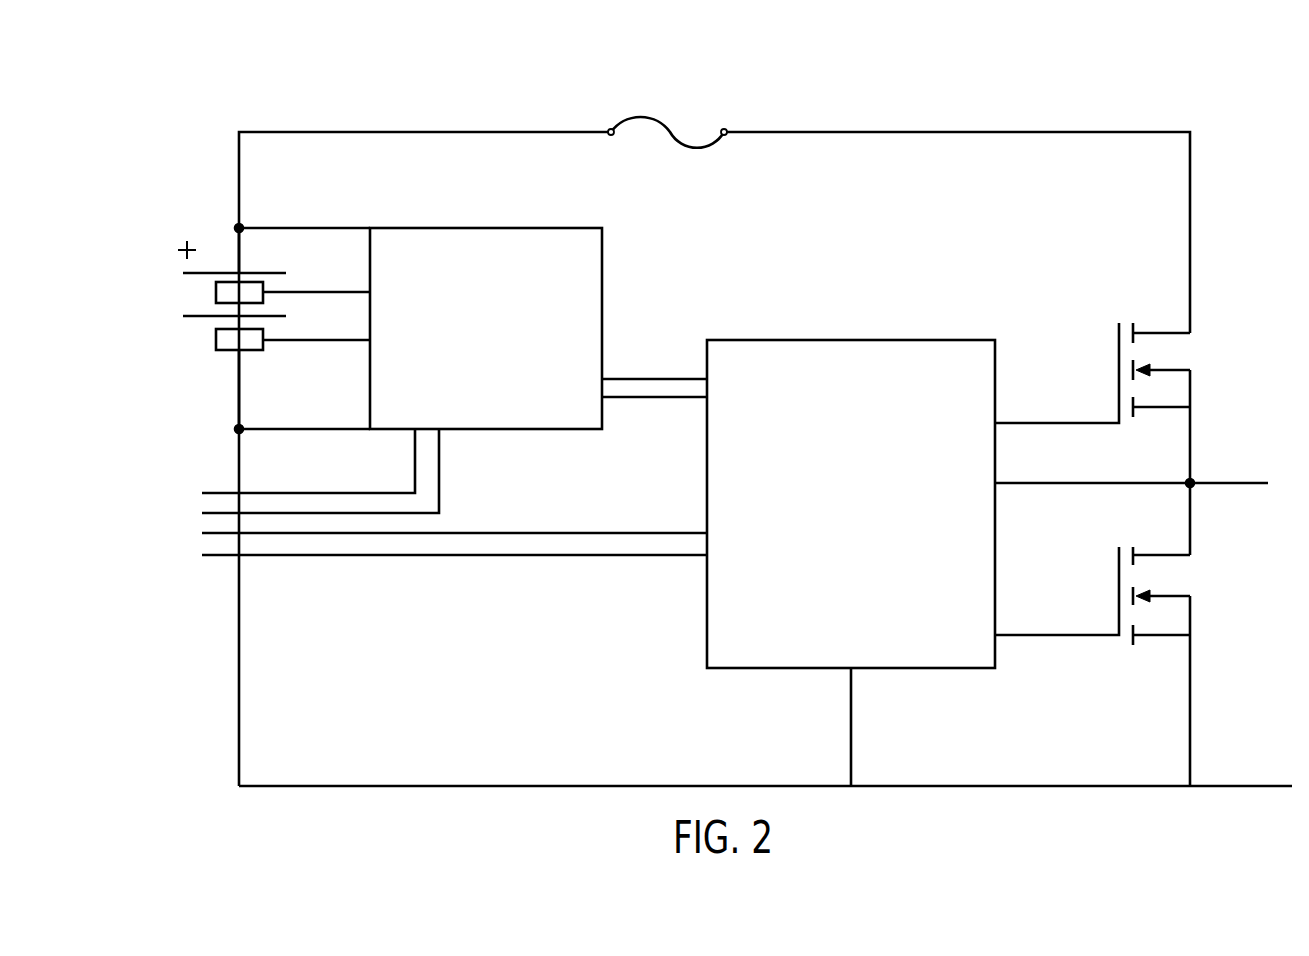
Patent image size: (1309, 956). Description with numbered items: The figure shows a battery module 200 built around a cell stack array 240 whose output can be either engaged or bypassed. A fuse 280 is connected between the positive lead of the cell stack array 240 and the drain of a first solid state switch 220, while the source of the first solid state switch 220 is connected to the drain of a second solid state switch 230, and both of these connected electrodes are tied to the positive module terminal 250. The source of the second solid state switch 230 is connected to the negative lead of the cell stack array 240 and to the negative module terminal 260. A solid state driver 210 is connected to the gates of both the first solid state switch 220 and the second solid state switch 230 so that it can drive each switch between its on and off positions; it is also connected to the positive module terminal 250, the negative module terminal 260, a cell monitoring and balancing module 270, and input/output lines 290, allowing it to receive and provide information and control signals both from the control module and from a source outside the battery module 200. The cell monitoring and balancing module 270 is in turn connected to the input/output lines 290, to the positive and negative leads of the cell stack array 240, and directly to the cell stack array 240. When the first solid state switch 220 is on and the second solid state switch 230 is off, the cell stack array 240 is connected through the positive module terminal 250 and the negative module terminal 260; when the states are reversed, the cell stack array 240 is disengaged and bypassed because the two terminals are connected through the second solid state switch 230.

The battery module 200 is at (320, 108).
The solid state driver 210 is at (838, 518).
The first solid state switch 220 is at (1092, 307).
The second solid state switch 230 is at (1116, 655).
The cell stack array 240 is at (211, 363).
The positive module terminal 250 is at (1277, 400).
The negative module terminal 260 is at (1277, 730).
The cell monitoring and balancing module 270 is at (469, 338).
The fuse 280 is at (750, 158).
The input/output lines 290 is at (202, 490).